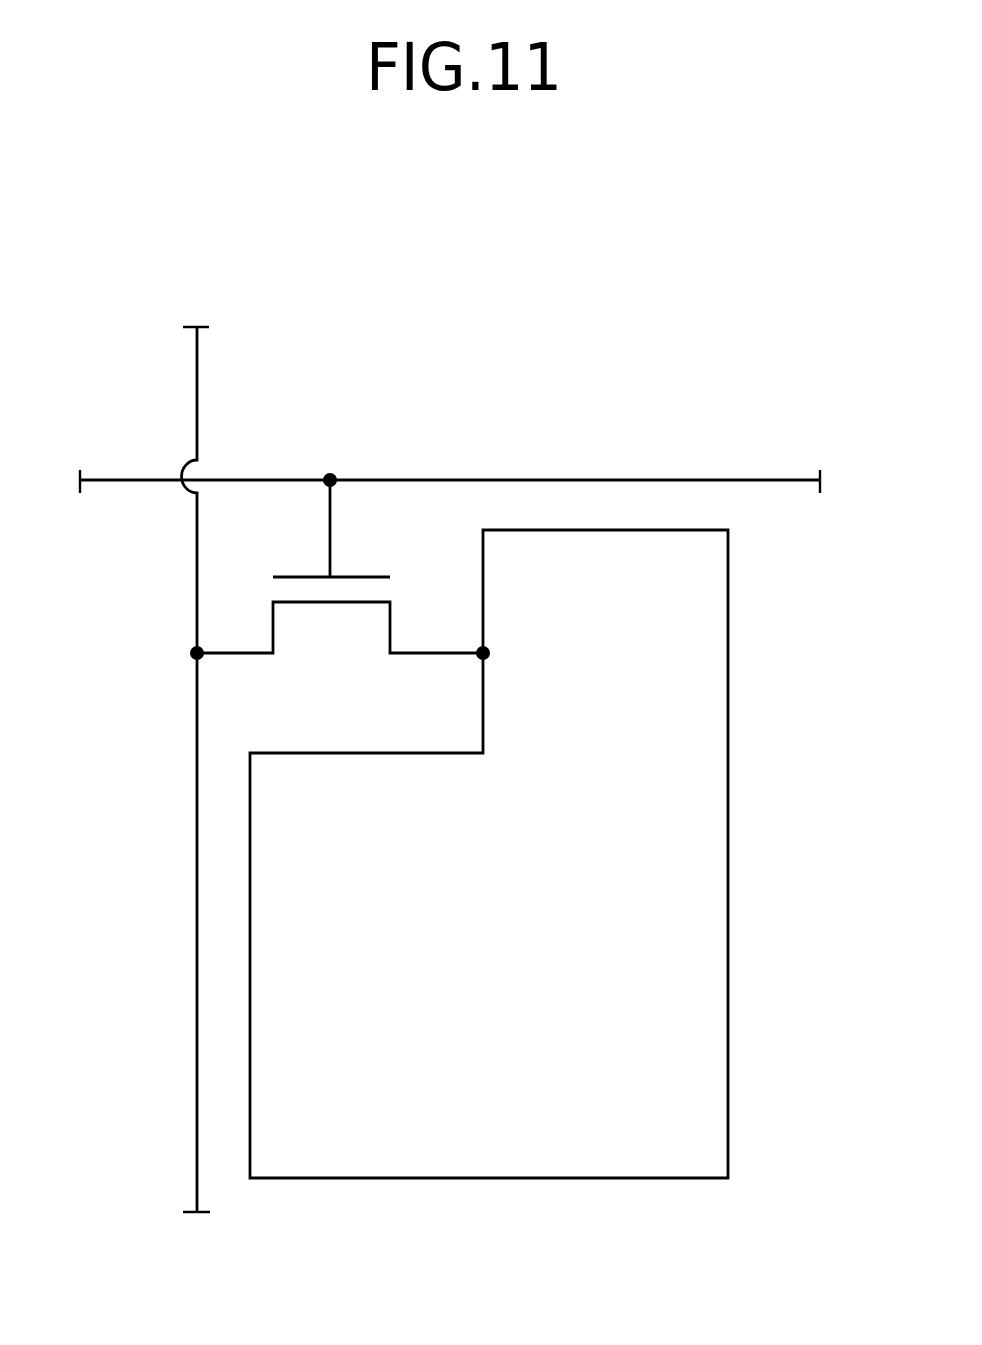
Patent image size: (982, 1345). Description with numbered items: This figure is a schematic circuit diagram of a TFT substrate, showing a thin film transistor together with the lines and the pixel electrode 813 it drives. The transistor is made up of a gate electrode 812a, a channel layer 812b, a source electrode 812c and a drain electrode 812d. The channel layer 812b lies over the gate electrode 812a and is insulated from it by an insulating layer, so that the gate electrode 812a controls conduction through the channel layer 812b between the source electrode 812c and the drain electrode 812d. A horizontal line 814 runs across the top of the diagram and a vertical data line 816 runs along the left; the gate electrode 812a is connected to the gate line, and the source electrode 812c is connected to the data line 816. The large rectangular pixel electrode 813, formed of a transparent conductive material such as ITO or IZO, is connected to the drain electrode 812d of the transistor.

The data line 816 is at (197, 368).
The gate line 814 is at (128, 477).
The gate electrode 812a is at (377, 575).
The channel layer 812b is at (278, 590).
The source electrode 812c is at (197, 653).
The drain electrode 812d is at (483, 653).
The pixel electrode 813 is at (680, 786).